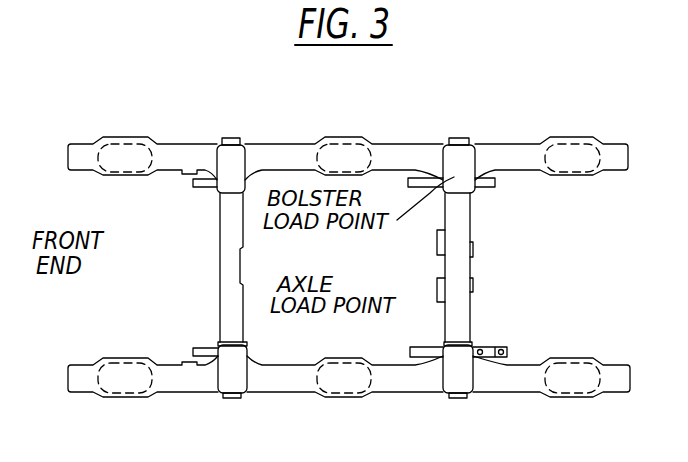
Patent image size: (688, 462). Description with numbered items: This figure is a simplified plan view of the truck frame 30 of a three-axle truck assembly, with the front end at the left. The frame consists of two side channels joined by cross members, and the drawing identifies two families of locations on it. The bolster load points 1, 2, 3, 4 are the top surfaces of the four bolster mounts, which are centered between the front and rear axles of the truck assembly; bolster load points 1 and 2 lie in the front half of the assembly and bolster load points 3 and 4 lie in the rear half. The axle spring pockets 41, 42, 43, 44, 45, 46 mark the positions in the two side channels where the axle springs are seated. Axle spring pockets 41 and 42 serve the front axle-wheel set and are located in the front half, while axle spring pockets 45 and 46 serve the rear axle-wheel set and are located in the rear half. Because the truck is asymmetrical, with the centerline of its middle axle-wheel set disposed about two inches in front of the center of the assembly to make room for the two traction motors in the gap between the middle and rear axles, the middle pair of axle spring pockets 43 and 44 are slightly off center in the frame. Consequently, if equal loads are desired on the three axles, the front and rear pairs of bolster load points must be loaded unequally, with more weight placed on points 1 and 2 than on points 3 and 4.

The truck frame 30 is at (220, 320).
The bolster load point 1 is at (233, 153).
The bolster load point 2 is at (243, 373).
The bolster load point 3 is at (455, 153).
The bolster load point 4 is at (460, 377).
The axle spring pocket 41 is at (126, 152).
The axle spring pocket 42 is at (127, 383).
The axle spring pocket 43 is at (339, 153).
The axle spring pocket 44 is at (355, 385).
The axle spring pocket 45 is at (577, 152).
The axle spring pocket 46 is at (585, 385).